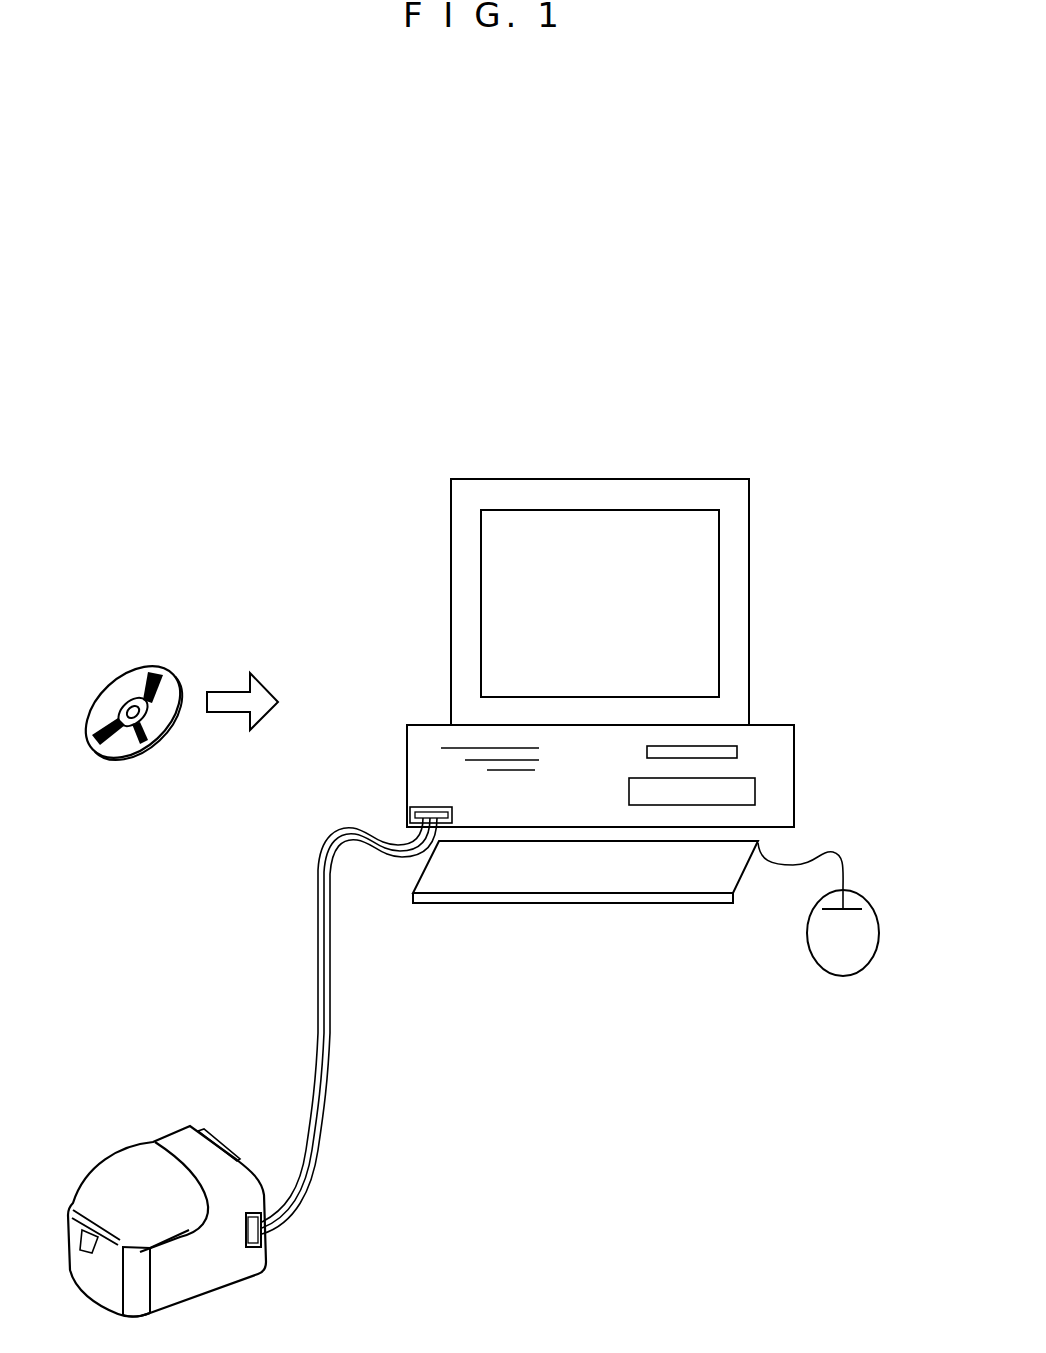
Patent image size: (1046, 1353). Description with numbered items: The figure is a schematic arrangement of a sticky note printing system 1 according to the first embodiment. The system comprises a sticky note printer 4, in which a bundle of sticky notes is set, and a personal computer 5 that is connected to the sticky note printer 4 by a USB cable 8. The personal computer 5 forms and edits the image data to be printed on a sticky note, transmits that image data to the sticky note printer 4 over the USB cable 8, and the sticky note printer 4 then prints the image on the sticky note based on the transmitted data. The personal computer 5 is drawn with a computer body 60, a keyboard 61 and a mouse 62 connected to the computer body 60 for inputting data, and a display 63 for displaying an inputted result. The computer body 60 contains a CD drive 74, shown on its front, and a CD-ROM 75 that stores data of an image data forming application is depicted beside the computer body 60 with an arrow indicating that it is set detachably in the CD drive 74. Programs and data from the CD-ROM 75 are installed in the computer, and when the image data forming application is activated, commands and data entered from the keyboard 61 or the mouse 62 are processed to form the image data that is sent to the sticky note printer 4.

The sticky note printing system 1 is at (560, 283).
The personal computer 5 is at (640, 415).
The display 63 is at (697, 582).
The computer body 60 is at (768, 744).
The CD drive 74 is at (735, 792).
The keyboard 61 is at (630, 865).
The mouse 62 is at (839, 945).
The USB cable 8 is at (330, 1038).
The sticky note printer 4 is at (163, 1108).
The CD-ROM 75 is at (135, 678).